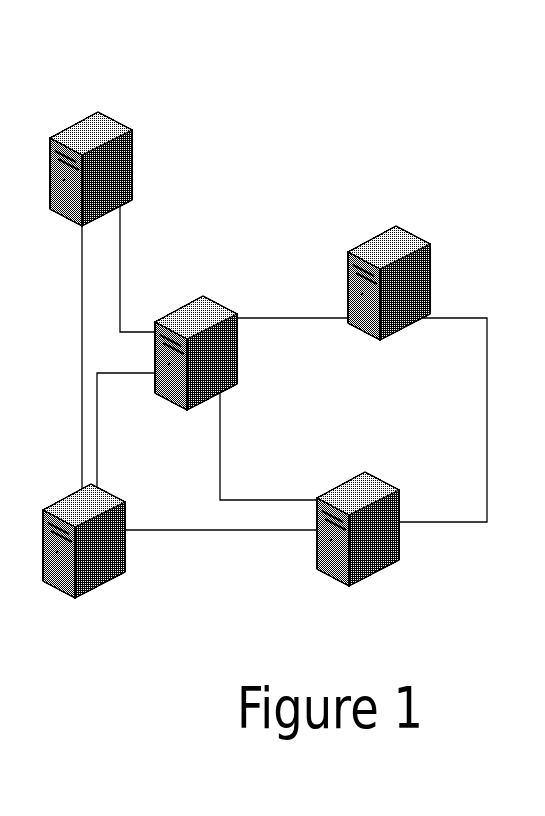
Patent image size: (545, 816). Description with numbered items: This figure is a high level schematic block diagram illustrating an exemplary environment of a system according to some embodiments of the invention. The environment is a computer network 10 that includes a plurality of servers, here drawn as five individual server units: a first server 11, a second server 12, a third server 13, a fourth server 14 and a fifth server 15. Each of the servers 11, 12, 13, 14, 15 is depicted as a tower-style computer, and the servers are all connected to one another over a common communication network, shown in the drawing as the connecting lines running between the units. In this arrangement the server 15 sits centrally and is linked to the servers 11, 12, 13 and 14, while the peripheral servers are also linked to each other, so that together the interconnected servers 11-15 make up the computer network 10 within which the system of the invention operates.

The computer network 10 is at (358, 121).
The server 11 is at (420, 236).
The server 12 is at (387, 483).
The server 13 is at (110, 494).
The server 14 is at (118, 122).
The server 15 is at (224, 306).